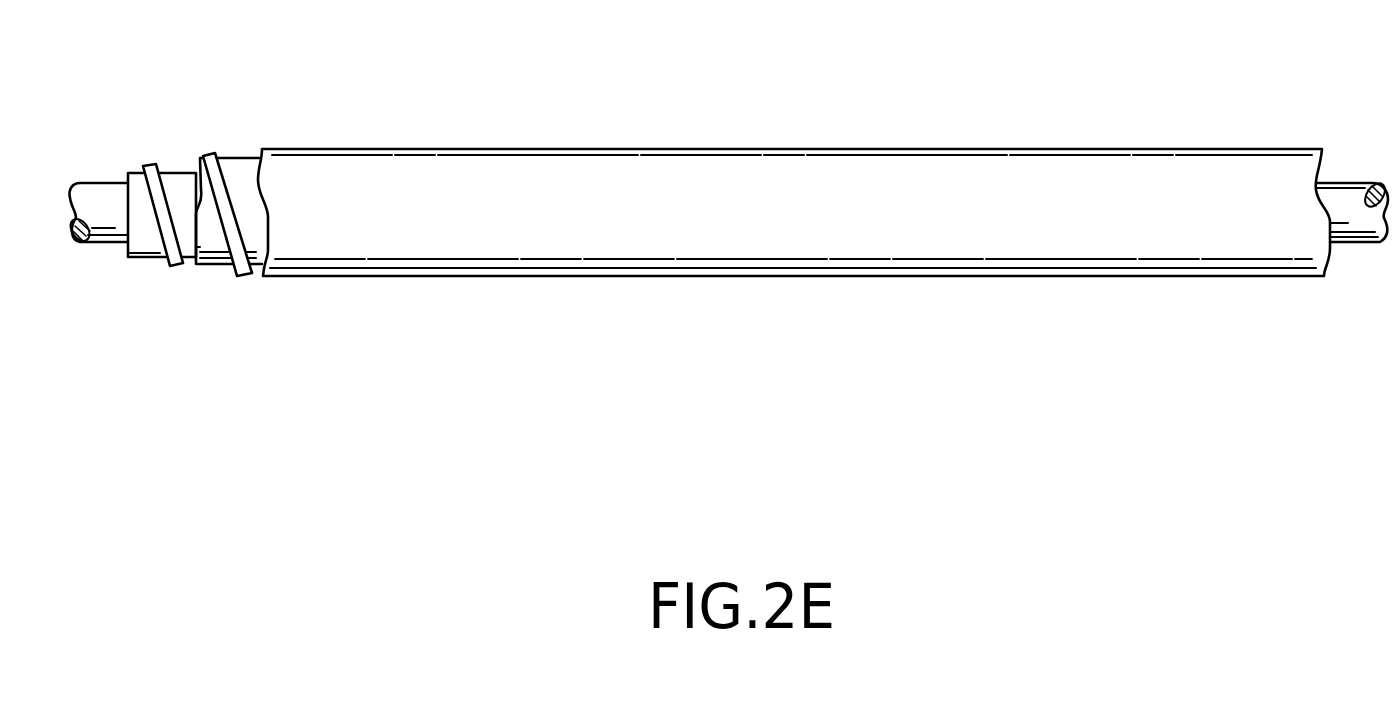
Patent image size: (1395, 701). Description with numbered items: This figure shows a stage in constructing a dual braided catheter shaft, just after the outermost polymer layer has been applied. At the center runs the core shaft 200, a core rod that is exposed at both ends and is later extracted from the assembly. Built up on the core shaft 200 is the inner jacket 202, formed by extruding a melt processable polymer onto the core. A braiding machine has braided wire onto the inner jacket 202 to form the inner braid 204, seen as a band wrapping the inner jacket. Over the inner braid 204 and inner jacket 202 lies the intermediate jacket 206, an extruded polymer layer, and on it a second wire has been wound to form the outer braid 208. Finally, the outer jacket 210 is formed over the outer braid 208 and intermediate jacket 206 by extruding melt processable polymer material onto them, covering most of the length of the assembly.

The core shaft 200 is at (98, 193).
The inner jacket 202 is at (184, 165).
The inner braid 204 is at (146, 165).
The intermediate jacket 206 is at (243, 157).
The outer braid 208 is at (210, 157).
The outer jacket 210 is at (333, 152).